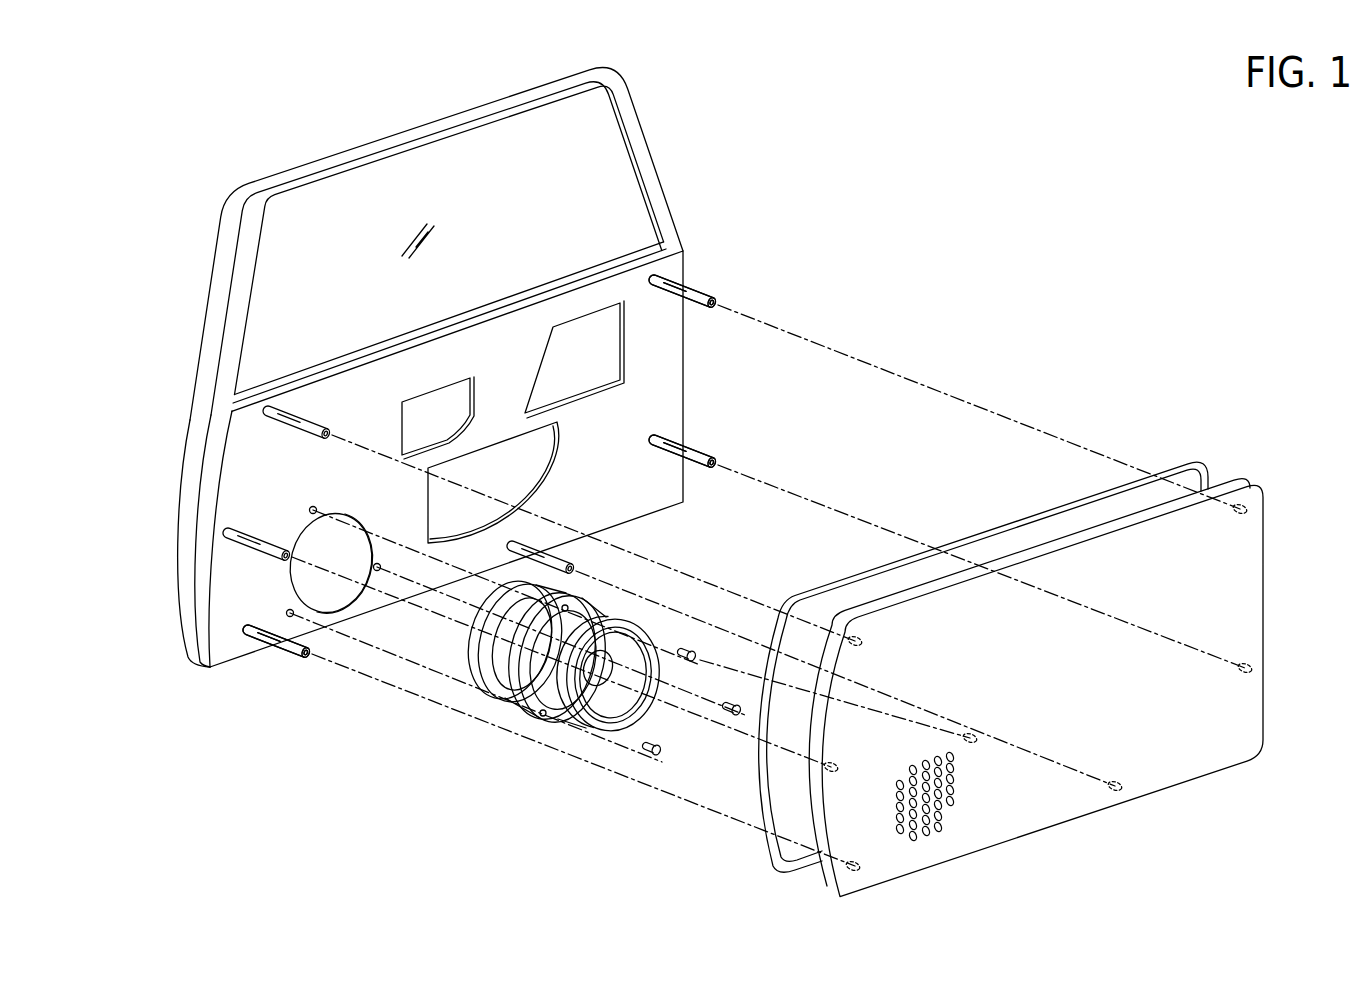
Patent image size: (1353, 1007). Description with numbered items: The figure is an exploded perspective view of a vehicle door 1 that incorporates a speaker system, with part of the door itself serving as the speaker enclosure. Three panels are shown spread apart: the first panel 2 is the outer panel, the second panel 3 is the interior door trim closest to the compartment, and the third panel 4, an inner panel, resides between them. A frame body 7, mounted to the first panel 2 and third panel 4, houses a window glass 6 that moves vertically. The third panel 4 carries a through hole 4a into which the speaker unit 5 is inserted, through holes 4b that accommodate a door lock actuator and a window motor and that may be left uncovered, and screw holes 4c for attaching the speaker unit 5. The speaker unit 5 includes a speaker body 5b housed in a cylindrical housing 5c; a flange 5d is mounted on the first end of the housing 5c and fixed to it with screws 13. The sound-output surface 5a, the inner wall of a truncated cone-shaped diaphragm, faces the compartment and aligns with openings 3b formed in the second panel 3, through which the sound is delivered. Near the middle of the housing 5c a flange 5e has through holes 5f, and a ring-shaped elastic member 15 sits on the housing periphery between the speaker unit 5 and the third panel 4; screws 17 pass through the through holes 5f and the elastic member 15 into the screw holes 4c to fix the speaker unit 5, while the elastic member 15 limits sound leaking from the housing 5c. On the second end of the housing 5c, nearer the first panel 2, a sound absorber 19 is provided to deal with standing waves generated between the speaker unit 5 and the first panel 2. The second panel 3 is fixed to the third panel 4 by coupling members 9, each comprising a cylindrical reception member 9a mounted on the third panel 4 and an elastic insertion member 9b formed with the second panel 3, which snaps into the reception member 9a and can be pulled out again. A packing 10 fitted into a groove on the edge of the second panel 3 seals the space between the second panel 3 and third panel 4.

The vehicle door 1 is at (192, 272).
The first panel 2 is at (186, 425).
The second panel 3 is at (1198, 716).
The openings 3b is at (945, 830).
The third panel 4 is at (660, 343).
The through hole 4a is at (343, 513).
The through holes 4b is at (495, 462).
The screw holes 4c is at (310, 508).
The speaker unit 5 is at (640, 607).
The sound-output surface 5a is at (604, 746).
The speaker body 5b is at (540, 702).
The housing 5c is at (608, 592).
The flange 5d is at (645, 712).
The flange 5e is at (518, 710).
The through holes 5f is at (558, 718).
The window glass 6 is at (628, 212).
The frame body 7 is at (640, 133).
The coupling members 9 is at (722, 296).
The reception member 9a is at (688, 285).
The insertion member 9b is at (1235, 518).
The packing 10 is at (983, 532).
The screws 13 is at (660, 628).
The elastic member 15 is at (465, 692).
The screws 17 is at (733, 707).
The sound absorber 19 is at (465, 640).